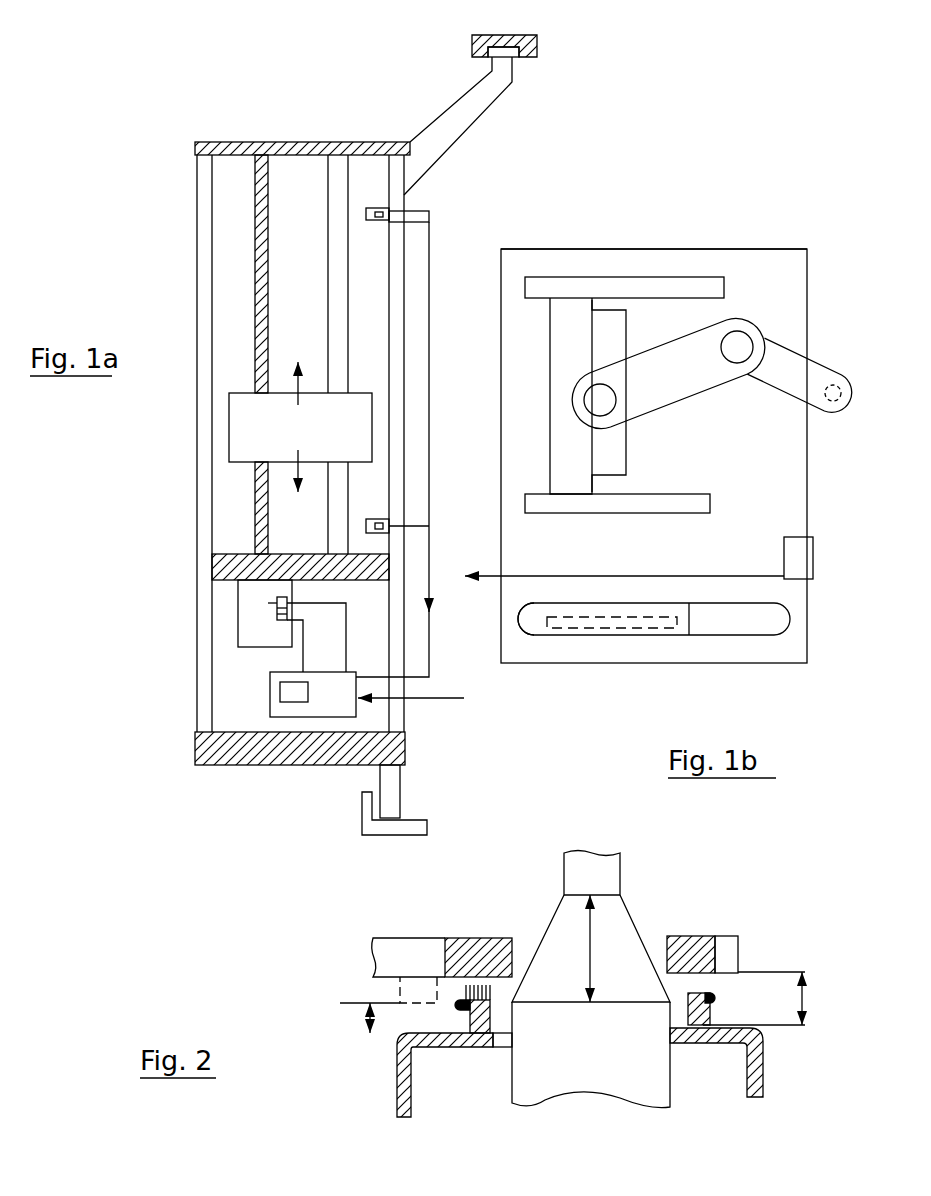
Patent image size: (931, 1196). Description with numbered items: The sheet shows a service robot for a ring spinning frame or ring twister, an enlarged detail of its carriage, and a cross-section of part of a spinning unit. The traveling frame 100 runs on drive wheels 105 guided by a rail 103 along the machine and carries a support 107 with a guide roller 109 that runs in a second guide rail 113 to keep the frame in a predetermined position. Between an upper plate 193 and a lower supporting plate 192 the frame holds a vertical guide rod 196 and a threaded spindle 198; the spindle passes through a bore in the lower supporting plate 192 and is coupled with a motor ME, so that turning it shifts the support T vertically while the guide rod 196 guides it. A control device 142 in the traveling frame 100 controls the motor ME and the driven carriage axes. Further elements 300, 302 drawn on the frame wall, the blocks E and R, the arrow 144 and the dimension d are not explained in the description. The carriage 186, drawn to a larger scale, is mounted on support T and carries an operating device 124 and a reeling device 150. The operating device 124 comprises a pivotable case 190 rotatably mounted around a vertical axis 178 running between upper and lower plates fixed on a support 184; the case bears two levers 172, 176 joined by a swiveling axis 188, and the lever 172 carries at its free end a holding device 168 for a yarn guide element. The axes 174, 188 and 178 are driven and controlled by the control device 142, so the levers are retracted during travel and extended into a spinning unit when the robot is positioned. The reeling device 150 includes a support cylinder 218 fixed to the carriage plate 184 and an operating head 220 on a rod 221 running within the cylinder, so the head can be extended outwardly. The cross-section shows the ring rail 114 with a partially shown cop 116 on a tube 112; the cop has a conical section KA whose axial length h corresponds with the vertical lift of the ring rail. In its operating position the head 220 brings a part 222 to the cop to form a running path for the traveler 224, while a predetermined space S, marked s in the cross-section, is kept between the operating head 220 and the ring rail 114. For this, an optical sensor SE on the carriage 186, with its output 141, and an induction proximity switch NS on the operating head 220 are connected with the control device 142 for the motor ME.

In FIG. 1A, the traveling frame 100 is at (183, 731).
In FIG. 1A, the rail 103 is at (362, 829).
In FIG. 1A, the drive wheels 105 is at (393, 800).
In FIG. 1A, the support 107 is at (477, 110).
In FIG. 1A, the guide roller 109 is at (517, 58).
In FIG. 1A, the second guide rail 113 is at (482, 35).
In FIG. 1A, the output 141 is at (424, 700).
In FIG. 1A, the control device 142 is at (334, 708).
In FIG. 1A, the lower supporting plate 192 is at (215, 566).
In FIG. 1A, the upper plate 193 is at (207, 149).
In FIG. 1A, the guide rod 196 is at (337, 168).
In FIG. 1A, the threaded spindle 198 is at (268, 170).
In FIG. 1A, the upper sensor 300 is at (431, 218).
In FIG. 1A, the lower sensor 302 is at (368, 517).
In FIG. 1A, the support T is at (250, 437).
In FIG. 1A, the encoder E is at (298, 630).
In FIG. 1A, the rotation sensor R is at (283, 623).
In FIG. 1A, the space S is at (288, 693).
In FIG. 1A, the motor ME is at (238, 603).
In FIG. 1B, the operating device 124 is at (810, 276).
In FIG. 1B, the transport direction 144 is at (538, 572).
In FIG. 1B, the reeling device 150 is at (608, 645).
In FIG. 1B, the holding device 168 is at (855, 372).
In FIG. 1B, the lever 172 is at (813, 359).
In FIG. 1B, the axis 174 is at (740, 345).
In FIG. 1B, the lever 176 is at (676, 362).
In FIG. 1B, the vertical axis 178 is at (565, 470).
In FIG. 1B, the support 184 is at (793, 463).
In FIG. 1B, the carriage 186 is at (702, 262).
In FIG. 1B, the swiveling axis 188 is at (598, 400).
In FIG. 1B, the pivotable case 190 is at (617, 452).
In FIG. 1B, the support cylinder 218 is at (538, 640).
In FIG. 1B, the operating head 220 is at (776, 628).
In FIG. 2, the operating head 220 is at (425, 960).
In FIG. 1B, the rod 221 is at (663, 634).
In FIG. 1B, the optical sensor SE is at (813, 548).
In FIG. 2, the tube 112 is at (603, 873).
In FIG. 2, the ring rail 114 is at (403, 1073).
In FIG. 2, the cop 116 is at (598, 1068).
In FIG. 2, the part 222 is at (723, 953).
In FIG. 2, the traveler 224 is at (697, 942).
In FIG. 2, the conical section KA is at (620, 932).
In FIG. 2, the induction proximity sensor NS is at (400, 995).
In FIG. 2, the axial length h is at (602, 948).
In FIG. 2, the distance d is at (370, 1019).
In FIG. 2, the space s is at (764, 998).